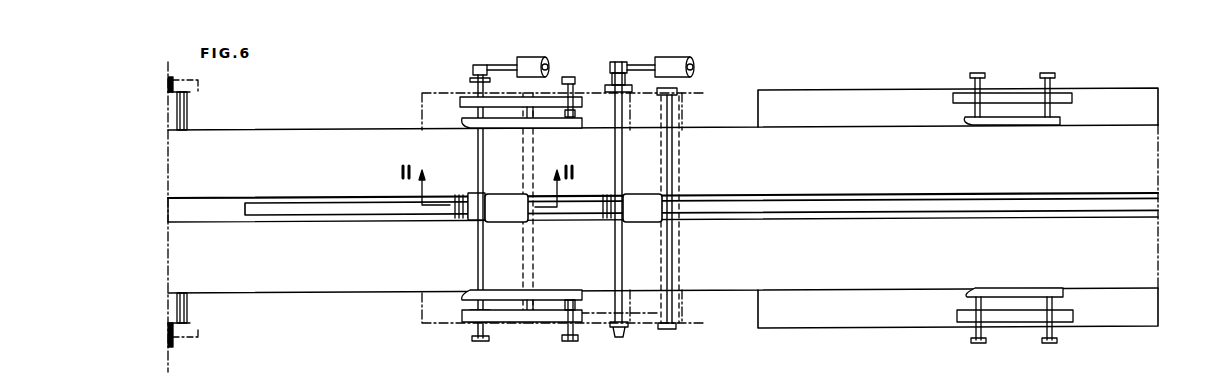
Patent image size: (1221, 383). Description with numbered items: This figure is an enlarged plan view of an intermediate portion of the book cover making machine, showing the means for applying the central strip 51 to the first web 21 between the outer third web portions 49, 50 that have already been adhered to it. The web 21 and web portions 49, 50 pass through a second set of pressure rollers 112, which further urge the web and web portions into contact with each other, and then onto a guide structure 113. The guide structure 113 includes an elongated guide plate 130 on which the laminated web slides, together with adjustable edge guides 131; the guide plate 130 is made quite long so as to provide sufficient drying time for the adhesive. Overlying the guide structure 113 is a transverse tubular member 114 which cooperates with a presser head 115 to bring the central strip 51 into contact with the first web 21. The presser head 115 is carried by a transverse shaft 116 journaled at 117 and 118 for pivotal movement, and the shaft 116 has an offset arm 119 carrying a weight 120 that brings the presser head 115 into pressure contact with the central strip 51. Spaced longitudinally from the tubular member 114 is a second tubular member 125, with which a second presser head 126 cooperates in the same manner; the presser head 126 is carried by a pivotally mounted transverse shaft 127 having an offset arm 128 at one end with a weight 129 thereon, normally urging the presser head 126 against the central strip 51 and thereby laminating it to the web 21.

The first web 21 is at (176, 208).
The outer third web portion 49 is at (188, 246).
The outer third web portion 50 is at (186, 170).
The central strip 51 is at (362, 214).
The second set of pressure rollers 112 is at (188, 311).
The guide structure 113 is at (733, 297).
The transverse tubular member 114 is at (525, 302).
The presser head 115 is at (510, 224).
The transverse shaft 116 is at (476, 263).
The journal 117 is at (470, 320).
The journal 118 is at (477, 101).
The offset arm 119 is at (488, 64).
The weight 120 is at (530, 61).
The second tubular member 125 is at (678, 310).
The second presser head 126 is at (654, 222).
The transverse shaft 127 is at (616, 300).
The offset arm 128 is at (642, 63).
The weight 129 is at (678, 62).
The guide plate 130 is at (846, 90).
The adjustable edge guides 131 is at (547, 93).